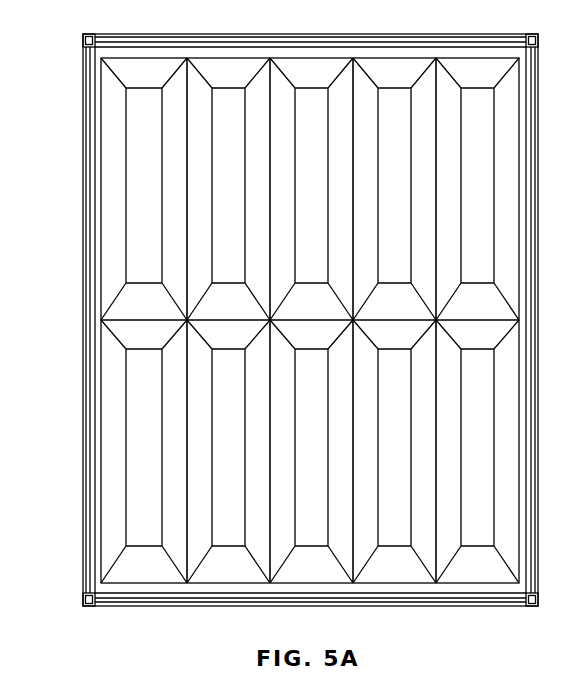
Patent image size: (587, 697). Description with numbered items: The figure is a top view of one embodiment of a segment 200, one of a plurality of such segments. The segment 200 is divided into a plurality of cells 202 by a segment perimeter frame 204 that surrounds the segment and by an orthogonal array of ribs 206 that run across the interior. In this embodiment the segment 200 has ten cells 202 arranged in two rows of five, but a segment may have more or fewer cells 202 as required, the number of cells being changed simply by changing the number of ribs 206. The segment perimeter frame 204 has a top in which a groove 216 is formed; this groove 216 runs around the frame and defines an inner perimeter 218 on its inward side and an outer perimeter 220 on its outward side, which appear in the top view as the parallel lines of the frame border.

The segment 200 is at (100, 26).
The cell 202 is at (152, 179).
The segment perimeter frame 204 is at (148, 34).
The rib 206 is at (189, 251).
The groove 216 is at (258, 39).
The inner perimeter 218 is at (329, 44).
The outer perimeter 220 is at (212, 34).